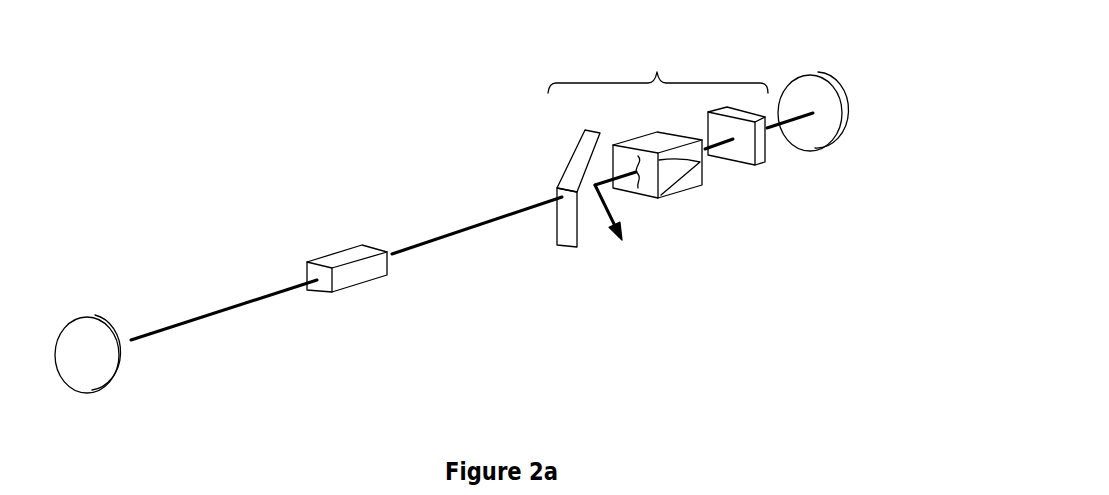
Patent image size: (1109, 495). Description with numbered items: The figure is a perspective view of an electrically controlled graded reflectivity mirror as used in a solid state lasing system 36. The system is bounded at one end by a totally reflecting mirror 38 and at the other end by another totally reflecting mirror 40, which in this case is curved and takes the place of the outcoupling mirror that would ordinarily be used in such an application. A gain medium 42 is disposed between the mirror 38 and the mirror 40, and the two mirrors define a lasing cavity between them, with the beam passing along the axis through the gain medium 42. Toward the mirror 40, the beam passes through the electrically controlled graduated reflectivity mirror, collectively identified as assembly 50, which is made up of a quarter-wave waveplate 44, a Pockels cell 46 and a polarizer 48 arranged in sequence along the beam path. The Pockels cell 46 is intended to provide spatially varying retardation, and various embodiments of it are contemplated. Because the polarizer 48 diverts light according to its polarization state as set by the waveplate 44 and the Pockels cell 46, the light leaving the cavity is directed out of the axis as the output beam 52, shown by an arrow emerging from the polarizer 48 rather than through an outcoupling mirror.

The solid state lasing system 36 is at (882, 52).
The totally reflecting mirror 38 is at (120, 373).
The totally reflecting mirror 40 is at (823, 130).
The gain medium 42 is at (363, 283).
The λ/4 waveplate 44 is at (760, 163).
The Pockels cell 46 is at (687, 177).
The polarizer 48 is at (573, 153).
The electrically controlled graduated reflectivity mirror 50 is at (658, 67).
The output beam 52 is at (622, 243).